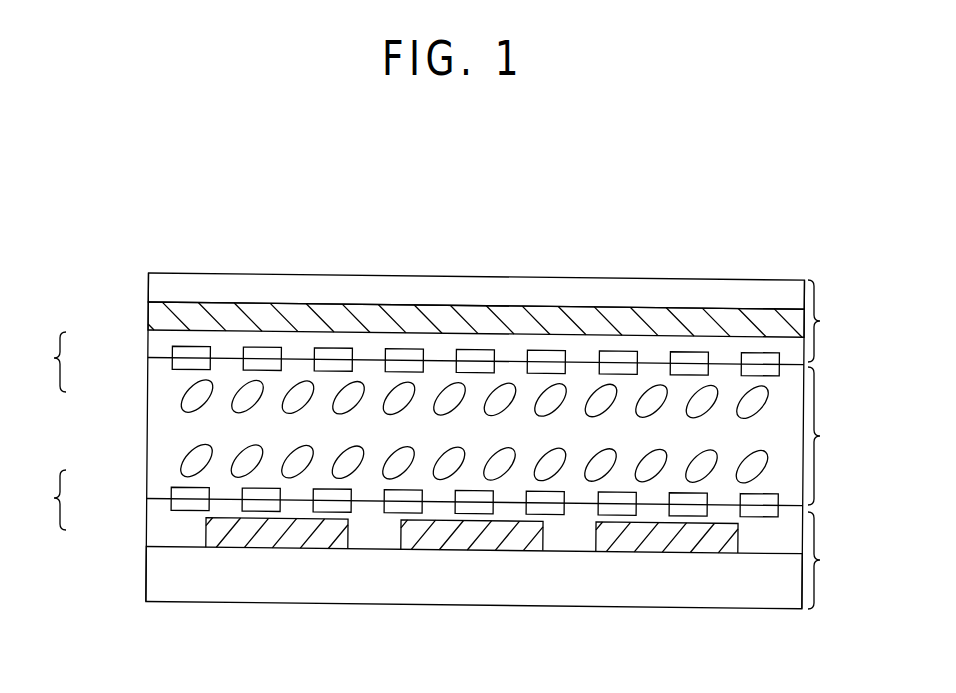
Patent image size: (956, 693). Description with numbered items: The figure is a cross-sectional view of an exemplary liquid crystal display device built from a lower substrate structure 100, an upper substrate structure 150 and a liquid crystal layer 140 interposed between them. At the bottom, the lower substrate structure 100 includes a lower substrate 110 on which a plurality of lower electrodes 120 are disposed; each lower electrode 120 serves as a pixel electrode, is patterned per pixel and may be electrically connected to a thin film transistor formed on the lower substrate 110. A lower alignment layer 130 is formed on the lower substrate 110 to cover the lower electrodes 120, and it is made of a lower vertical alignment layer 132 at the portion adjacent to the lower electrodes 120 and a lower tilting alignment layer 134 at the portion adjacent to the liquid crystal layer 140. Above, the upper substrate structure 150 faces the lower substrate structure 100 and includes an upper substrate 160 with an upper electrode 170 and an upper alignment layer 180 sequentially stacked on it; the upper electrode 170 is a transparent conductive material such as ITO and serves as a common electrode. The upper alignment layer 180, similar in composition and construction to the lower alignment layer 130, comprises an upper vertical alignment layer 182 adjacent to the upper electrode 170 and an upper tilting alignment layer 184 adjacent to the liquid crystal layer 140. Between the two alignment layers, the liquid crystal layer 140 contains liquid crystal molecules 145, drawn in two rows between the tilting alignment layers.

The lower substrate structure 100 is at (503, 559).
The lower substrate 110 is at (363, 593).
The lower electrode 120 is at (275, 548).
The lower alignment layer 130 is at (406, 500).
The lower vertical alignment layer 132 is at (152, 522).
The lower tilting alignment layer 134 is at (173, 490).
The liquid crystal layer 140 is at (504, 436).
The liquid crystal molecules 145 is at (743, 398).
The upper substrate structure 150 is at (504, 317).
The upper substrate 160 is at (148, 284).
The upper electrode 170 is at (148, 315).
The upper alignment layer 180 is at (406, 362).
The upper vertical alignment layer 182 is at (152, 345).
The upper tilting alignment layer 184 is at (173, 367).